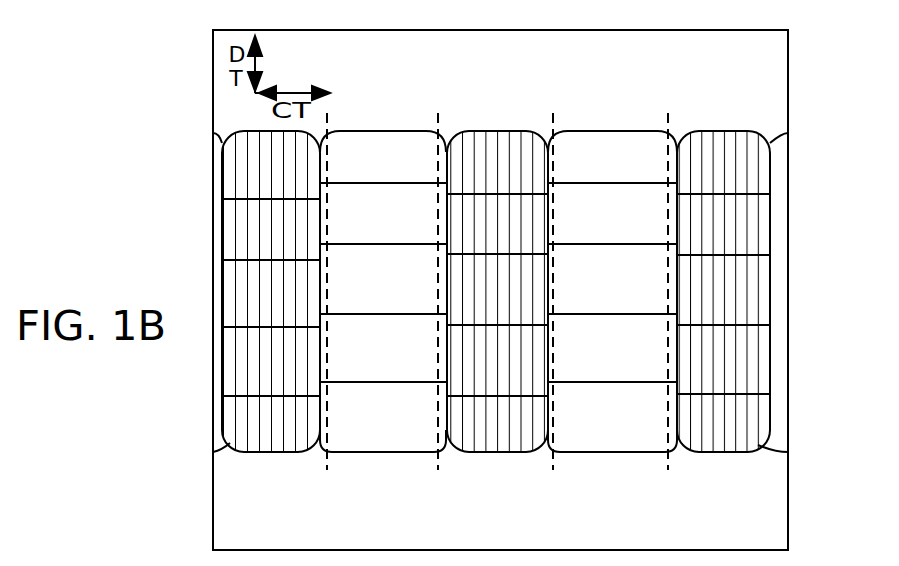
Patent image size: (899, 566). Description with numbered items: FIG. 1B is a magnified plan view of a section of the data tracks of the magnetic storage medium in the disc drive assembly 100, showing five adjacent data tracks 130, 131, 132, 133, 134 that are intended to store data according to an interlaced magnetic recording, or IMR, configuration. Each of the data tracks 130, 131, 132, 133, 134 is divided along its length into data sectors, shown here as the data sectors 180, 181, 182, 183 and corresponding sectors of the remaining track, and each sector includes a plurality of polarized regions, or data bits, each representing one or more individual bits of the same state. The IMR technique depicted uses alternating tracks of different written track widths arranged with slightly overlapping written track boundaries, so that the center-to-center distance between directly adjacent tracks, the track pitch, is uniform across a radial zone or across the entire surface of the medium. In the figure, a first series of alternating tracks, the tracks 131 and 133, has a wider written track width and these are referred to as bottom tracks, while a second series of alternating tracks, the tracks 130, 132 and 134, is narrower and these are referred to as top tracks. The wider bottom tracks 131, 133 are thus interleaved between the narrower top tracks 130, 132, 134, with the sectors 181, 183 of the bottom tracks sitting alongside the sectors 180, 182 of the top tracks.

The semiconductor device 100 is at (552, 557).
The data track 130 is at (277, 323).
The data track 131 is at (383, 314).
The data track 132 is at (505, 323).
The data track 133 is at (612, 314).
The data track 134 is at (728, 323).
The data sector 180 is at (252, 177).
The data sector 181 is at (364, 169).
The data sector 182 is at (478, 174).
The data sector 183 is at (591, 169).